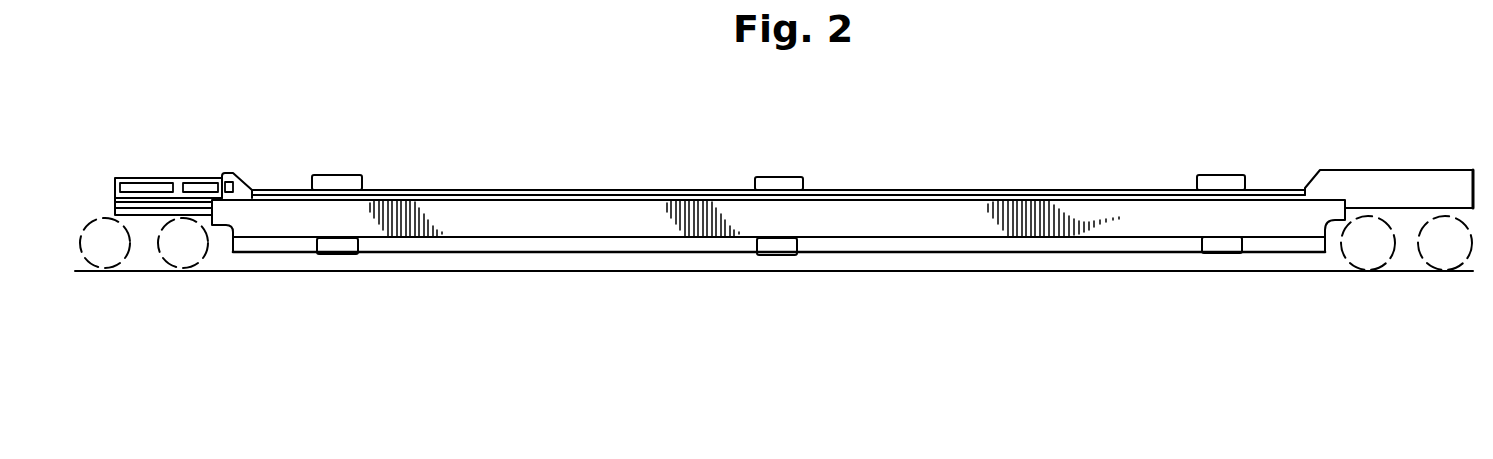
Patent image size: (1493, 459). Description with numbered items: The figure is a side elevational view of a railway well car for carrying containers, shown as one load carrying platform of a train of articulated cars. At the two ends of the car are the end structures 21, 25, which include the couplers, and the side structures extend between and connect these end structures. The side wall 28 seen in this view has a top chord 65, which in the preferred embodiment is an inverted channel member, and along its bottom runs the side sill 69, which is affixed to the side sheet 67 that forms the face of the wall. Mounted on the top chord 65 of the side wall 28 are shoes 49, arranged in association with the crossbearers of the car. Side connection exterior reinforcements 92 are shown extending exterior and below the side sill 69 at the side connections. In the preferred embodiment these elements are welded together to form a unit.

The end structure 21 is at (1427, 172).
The end structure 25 is at (140, 178).
The side wall 28 is at (1042, 195).
The shoe 49 is at (345, 182).
The top chord 65 is at (525, 195).
The side sheet 67 is at (743, 208).
The side sill 69 is at (893, 245).
The side connection exterior reinforcement 92 is at (348, 248).